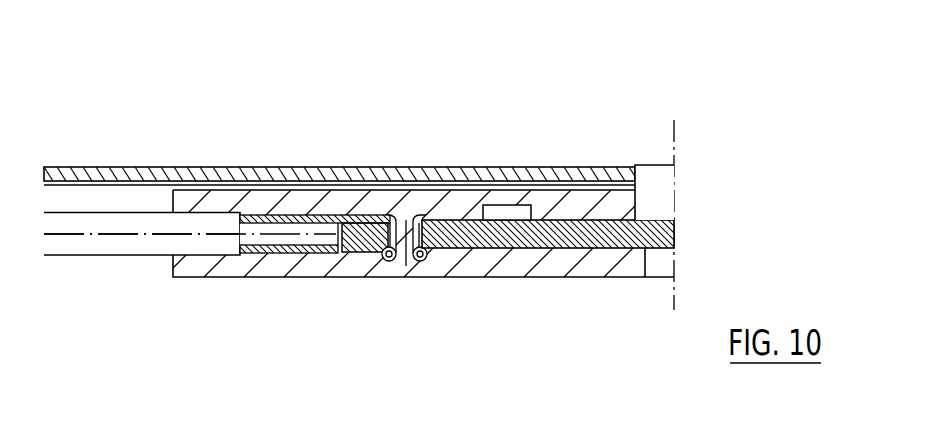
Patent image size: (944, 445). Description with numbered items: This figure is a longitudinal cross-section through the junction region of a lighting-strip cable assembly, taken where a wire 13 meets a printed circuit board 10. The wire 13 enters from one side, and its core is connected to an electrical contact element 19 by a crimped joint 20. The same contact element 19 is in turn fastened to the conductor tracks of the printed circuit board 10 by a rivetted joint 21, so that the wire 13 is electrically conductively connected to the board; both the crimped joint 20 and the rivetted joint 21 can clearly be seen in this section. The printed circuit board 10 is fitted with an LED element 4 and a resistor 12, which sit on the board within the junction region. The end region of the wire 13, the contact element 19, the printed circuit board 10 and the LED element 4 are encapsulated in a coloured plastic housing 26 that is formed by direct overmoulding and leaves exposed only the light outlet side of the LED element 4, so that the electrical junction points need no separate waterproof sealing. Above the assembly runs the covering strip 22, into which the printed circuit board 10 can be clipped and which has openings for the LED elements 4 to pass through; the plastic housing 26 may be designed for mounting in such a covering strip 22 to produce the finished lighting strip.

The LED element 4 is at (658, 175).
The printed circuit board 10 is at (674, 220).
The resistor 12 is at (498, 206).
The wire 13 is at (113, 245).
The contact element 19 is at (276, 213).
The crimped joint 20 is at (296, 250).
The rivetted joint 21 is at (422, 257).
The covering strip 22 is at (135, 180).
The plastic housing 26 is at (557, 260).